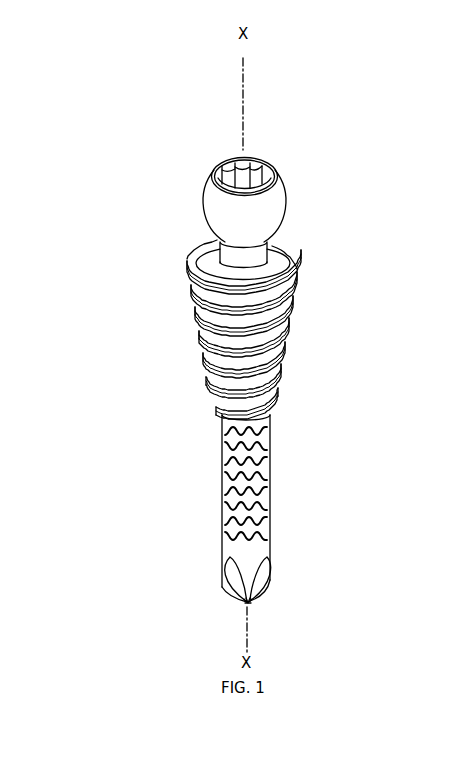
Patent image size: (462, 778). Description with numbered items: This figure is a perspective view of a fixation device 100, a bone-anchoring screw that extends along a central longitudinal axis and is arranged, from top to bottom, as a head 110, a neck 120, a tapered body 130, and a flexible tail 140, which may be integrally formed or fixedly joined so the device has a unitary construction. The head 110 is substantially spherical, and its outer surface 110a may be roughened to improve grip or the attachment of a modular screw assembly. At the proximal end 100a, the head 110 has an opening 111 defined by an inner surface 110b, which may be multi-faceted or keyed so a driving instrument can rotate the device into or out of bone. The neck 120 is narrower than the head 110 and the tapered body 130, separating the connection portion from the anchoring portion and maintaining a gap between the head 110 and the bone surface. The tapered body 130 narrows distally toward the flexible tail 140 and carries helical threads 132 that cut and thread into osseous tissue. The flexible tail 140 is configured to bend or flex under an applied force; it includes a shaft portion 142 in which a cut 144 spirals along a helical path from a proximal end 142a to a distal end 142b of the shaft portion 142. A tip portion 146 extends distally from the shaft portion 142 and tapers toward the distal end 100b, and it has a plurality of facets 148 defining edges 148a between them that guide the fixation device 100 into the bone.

The fixation device 100 is at (117, 154).
The proximal end 100a is at (281, 181).
The distal end 100b is at (241, 601).
The head 110 is at (184, 198).
The outer surface 110a is at (287, 197).
The inner surface 110b is at (262, 161).
The opening 111 is at (216, 170).
The neck 120 is at (268, 247).
The tapered body 130 is at (171, 327).
The helical threads 132 is at (305, 321).
The flexible tail 140 is at (196, 463).
The shaft portion 142 is at (270, 485).
The proximal end of the shaft portion 142a is at (209, 423).
The distal end of the shaft portion 142b is at (201, 537).
The cut 144 is at (247, 428).
The tip portion 146 is at (271, 578).
The facets 148 is at (265, 593).
The edges 148a is at (252, 603).